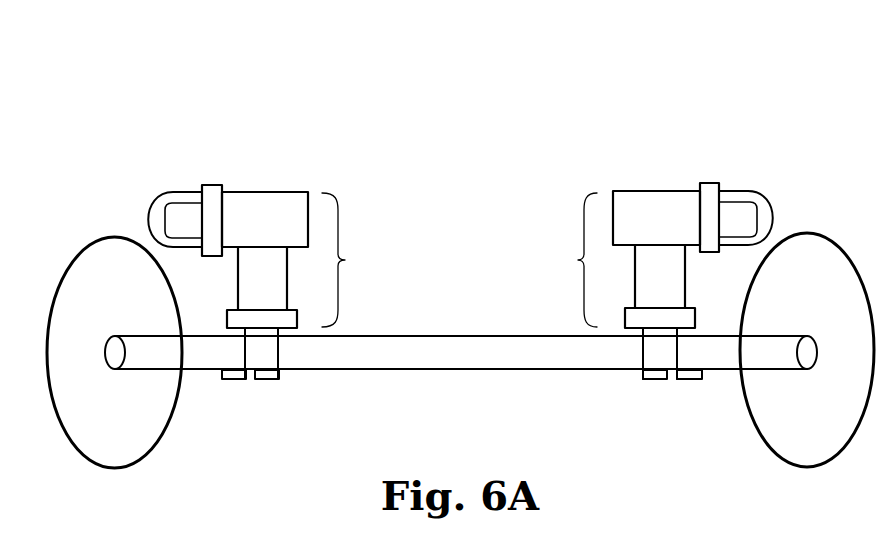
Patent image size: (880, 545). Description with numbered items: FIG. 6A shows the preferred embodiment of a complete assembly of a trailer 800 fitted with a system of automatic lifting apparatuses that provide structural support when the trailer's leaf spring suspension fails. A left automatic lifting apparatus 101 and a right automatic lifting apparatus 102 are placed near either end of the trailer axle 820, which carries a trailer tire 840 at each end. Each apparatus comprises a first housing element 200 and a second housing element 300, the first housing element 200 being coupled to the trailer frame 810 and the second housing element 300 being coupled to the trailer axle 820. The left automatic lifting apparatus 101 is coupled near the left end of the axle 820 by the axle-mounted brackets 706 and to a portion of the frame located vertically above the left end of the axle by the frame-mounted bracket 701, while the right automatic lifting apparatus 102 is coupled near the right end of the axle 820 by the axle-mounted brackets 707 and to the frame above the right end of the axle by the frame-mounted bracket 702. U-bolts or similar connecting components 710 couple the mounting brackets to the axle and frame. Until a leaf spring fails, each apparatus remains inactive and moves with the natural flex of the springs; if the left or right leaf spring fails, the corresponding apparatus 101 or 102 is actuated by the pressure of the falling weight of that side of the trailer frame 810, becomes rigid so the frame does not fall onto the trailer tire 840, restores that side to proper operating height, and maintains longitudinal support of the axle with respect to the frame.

The trailer 800 is at (250, 92).
The left automatic lifting apparatus 101 is at (354, 260).
The right automatic lifting apparatus 102 is at (566, 260).
The first housing element 200 is at (272, 205).
The second housing element 300 is at (275, 293).
The frame-mounted bracket 701 is at (210, 193).
The frame-mounted bracket 702 is at (712, 193).
The axle-mounted brackets 706 is at (262, 318).
The axle-mounted brackets 707 is at (660, 317).
The connecting components 710 is at (147, 218).
The trailer frame 810 is at (175, 212).
The trailer axle 820 is at (488, 348).
The trailer tire 840 is at (78, 450).